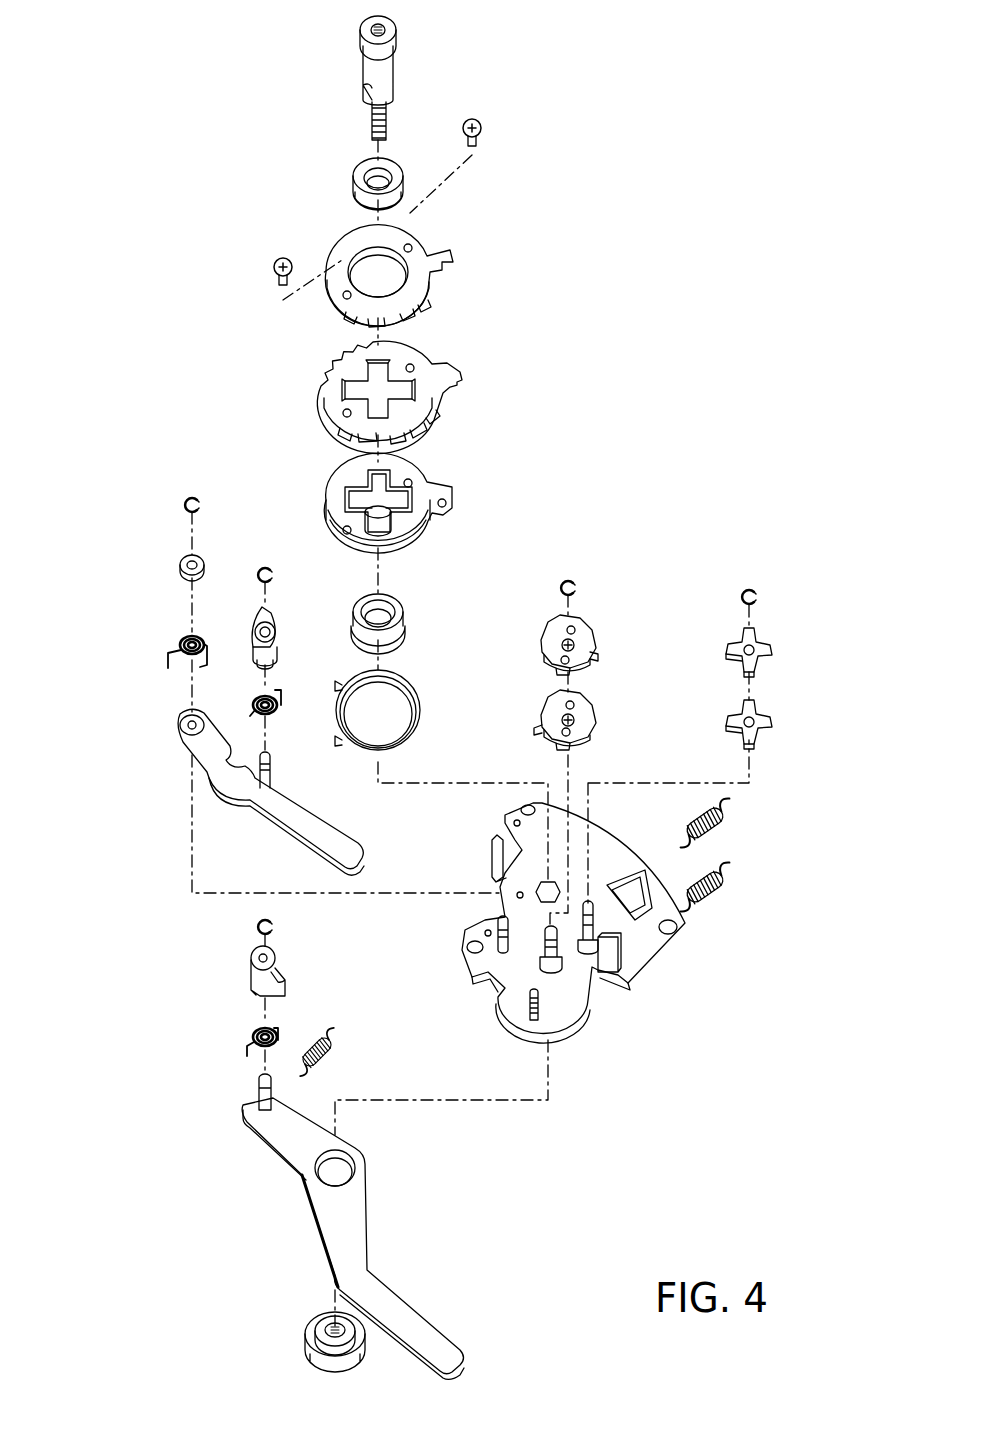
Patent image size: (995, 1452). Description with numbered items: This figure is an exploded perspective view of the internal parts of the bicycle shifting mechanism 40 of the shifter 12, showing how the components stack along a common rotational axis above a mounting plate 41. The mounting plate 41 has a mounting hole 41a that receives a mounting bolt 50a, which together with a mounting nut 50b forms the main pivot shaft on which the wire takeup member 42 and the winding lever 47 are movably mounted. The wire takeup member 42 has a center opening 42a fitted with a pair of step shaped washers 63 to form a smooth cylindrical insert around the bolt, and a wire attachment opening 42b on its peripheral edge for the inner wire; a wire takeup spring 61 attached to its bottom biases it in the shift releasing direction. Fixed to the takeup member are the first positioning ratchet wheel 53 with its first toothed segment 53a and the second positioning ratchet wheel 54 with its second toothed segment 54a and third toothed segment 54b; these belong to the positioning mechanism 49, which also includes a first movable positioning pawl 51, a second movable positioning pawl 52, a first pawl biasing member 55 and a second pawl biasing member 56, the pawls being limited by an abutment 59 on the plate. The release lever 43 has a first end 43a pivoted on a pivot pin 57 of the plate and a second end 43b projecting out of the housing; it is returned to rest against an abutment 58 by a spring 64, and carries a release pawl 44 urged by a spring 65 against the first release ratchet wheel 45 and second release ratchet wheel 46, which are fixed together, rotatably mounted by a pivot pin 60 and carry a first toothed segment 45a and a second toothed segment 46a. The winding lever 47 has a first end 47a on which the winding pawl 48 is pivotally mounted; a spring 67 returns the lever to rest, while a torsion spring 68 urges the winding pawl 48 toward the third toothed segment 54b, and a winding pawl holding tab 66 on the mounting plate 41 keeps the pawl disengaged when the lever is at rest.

The damper assembly 12 is at (625, 317).
The bicycle shifting mechanism 40 is at (160, 957).
The mounting plate 41 is at (572, 930).
The mounting hole 41a is at (546, 890).
The wire takeup member 42 is at (429, 504).
The center opening 42a is at (393, 511).
The wire attachment opening 42b is at (447, 503).
The release lever 43 is at (273, 792).
The first end 43a is at (185, 735).
The second end 43b is at (360, 858).
The release pawl 44 is at (268, 625).
The first release ratchet wheel 45 is at (583, 640).
The first toothed segment 45a is at (598, 654).
The second release ratchet wheel 46 is at (560, 714).
The second toothed segment 46a is at (536, 729).
The winding lever 47 is at (336, 1226).
The first end 47a is at (290, 1135).
The winding pawl 48 is at (278, 960).
The positioning mechanism 49 is at (797, 603).
The mounting bolt 50a is at (395, 62).
The mounting nut 50b is at (318, 1330).
The first movable positioning pawl 51 is at (760, 648).
The second movable positioning pawl 52 is at (770, 725).
The first positioning ratchet wheel 53 is at (413, 272).
The first toothed segment 53a is at (420, 310).
The second positioning ratchet wheel 54 is at (383, 393).
The second toothed segment 54a is at (432, 418).
The third toothed segment 54b is at (335, 362).
The first pawl biasing member 55 is at (718, 822).
The second pawl biasing member 56 is at (718, 885).
The pivot pin 57 is at (495, 968).
The abutment 58 is at (530, 1005).
The abutment 59 is at (607, 972).
The pivot pin 60 is at (560, 950).
The wire takeup spring 61 is at (405, 678).
The step shaped washers 63 is at (352, 168).
The spring 64 is at (185, 642).
The spring 65 is at (255, 706).
The winding pawl holding tab 66 is at (492, 855).
The spring 67 is at (332, 1060).
The torsion spring 68 is at (255, 1038).